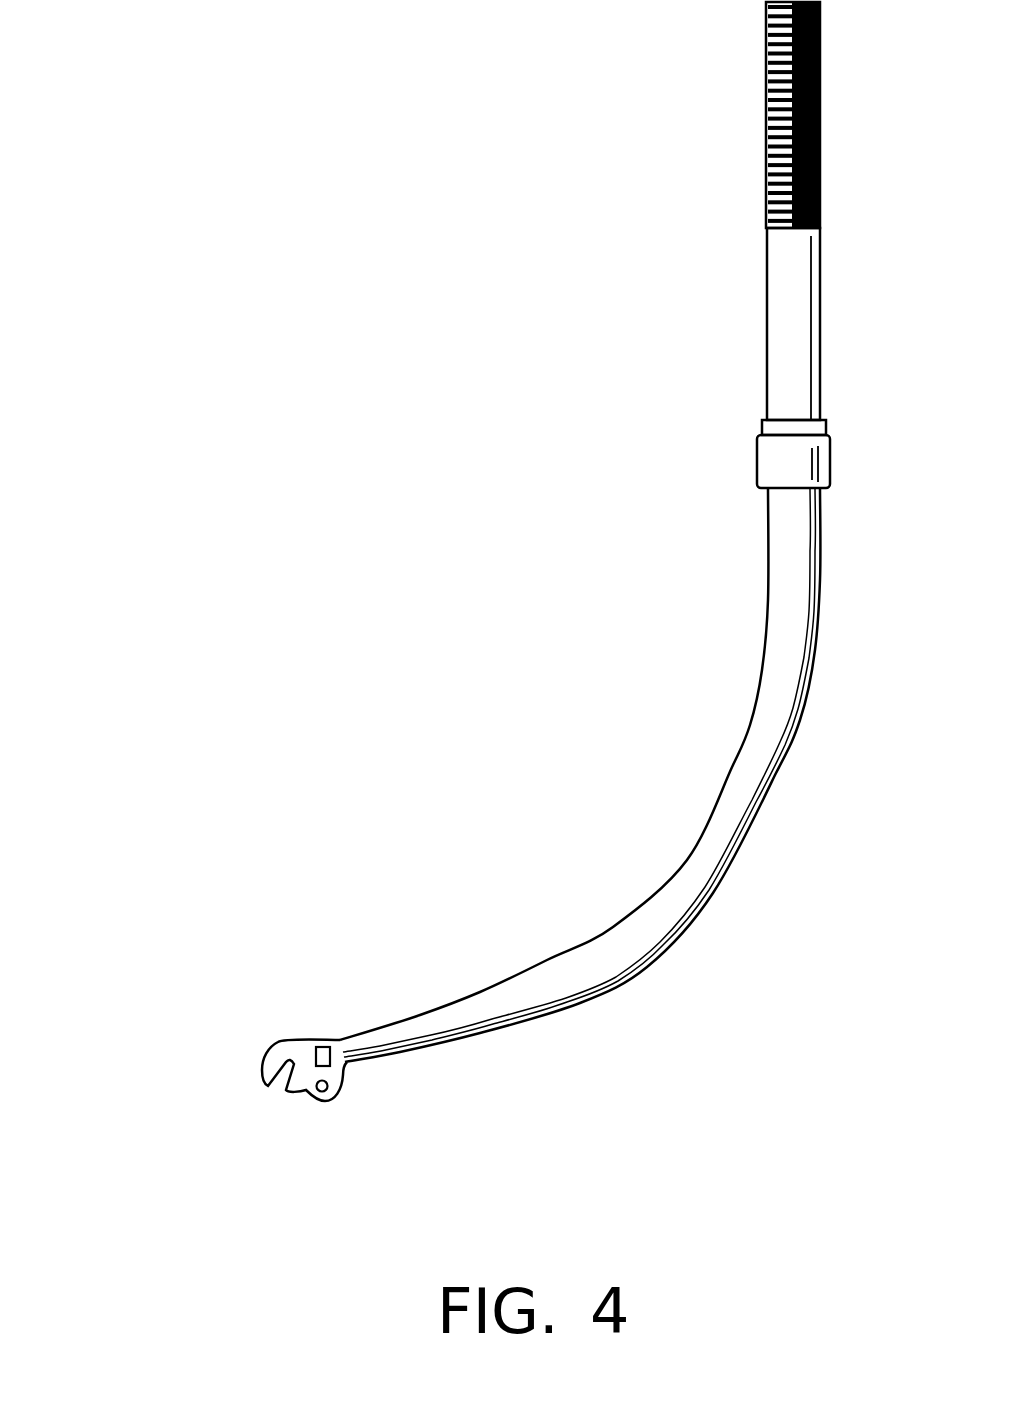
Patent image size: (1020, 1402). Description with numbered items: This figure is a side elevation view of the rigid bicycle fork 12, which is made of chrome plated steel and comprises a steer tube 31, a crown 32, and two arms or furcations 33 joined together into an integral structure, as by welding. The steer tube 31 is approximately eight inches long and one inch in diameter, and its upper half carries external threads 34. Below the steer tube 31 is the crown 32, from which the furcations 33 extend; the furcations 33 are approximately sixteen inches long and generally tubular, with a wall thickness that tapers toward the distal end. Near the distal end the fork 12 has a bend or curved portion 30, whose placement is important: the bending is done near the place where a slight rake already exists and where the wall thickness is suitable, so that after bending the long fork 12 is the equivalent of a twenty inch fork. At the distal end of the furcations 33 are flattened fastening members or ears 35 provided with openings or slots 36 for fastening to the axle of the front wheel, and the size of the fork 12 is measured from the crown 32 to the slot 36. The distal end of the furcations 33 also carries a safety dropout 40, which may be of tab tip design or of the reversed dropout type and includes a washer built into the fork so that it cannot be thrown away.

The rigid bicycle fork 12 is at (548, 551).
The bend or curved portion 30 is at (724, 830).
The steer tube 31 is at (785, 323).
The crown 32 is at (775, 462).
The arms or furcations 33 is at (550, 955).
The external threads 34 is at (767, 63).
The flattened fastening members or ears 35 is at (277, 1052).
The openings or slots 36 is at (278, 1088).
The safety dropout 40 is at (182, 1058).